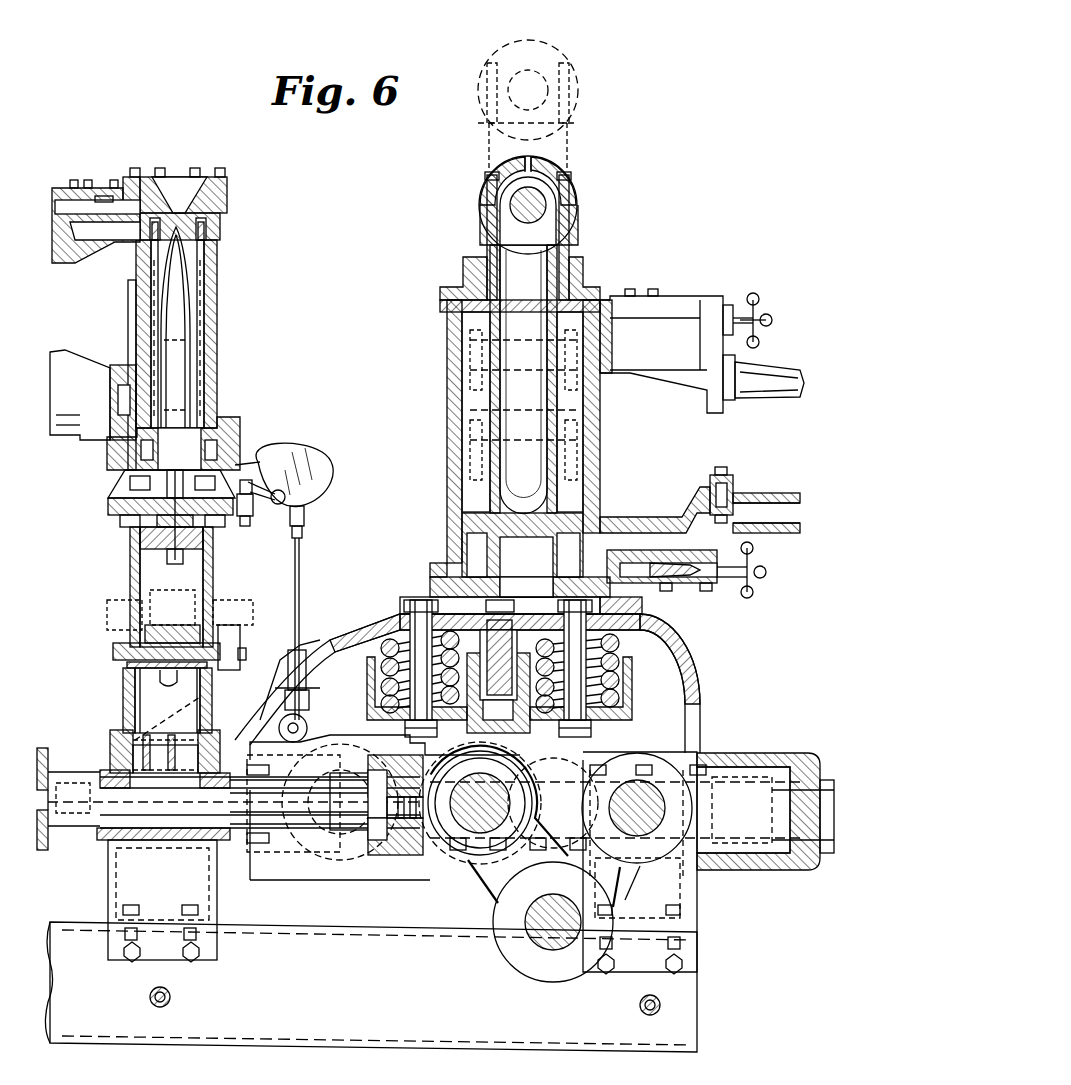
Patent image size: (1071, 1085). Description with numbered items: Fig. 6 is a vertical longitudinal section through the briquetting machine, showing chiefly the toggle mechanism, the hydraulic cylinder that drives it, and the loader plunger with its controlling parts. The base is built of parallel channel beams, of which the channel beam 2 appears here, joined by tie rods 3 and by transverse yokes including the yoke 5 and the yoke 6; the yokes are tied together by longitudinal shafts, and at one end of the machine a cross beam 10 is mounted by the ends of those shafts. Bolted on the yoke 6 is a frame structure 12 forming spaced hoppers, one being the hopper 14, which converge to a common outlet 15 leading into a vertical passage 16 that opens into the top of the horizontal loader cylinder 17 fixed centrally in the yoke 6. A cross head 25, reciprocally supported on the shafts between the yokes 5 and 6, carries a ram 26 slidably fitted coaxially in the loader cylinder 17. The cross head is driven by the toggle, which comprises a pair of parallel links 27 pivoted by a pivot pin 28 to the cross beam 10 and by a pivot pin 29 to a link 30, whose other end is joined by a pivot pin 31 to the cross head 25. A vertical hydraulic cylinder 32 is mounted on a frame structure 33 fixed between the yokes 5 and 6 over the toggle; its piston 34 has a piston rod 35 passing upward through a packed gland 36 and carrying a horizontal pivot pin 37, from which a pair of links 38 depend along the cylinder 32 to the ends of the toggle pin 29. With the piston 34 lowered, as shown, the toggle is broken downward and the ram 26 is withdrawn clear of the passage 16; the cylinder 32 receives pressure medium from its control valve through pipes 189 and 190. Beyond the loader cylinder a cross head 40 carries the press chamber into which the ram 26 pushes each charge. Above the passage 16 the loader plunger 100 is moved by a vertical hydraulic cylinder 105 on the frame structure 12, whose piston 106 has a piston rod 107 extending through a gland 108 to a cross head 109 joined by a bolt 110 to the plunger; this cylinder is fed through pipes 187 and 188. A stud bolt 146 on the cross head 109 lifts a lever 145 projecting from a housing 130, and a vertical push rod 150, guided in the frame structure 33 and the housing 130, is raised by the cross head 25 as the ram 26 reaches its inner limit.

The channel beam 2 is at (285, 1050).
The tie rod 3 is at (170, 995).
The yoke 5 is at (692, 898).
The yoke 6 is at (200, 840).
The cross beam 10 is at (758, 755).
The frame structure 12 is at (213, 566).
The hopper 14 is at (155, 685).
The outlet 15 is at (160, 725).
The vertical passage 16 is at (158, 745).
The loader cylinder 17 is at (150, 843).
The cross head 25 is at (390, 855).
The ram 26 is at (290, 824).
The parallel links 27 is at (618, 885).
The pivot pin 28 is at (665, 813).
The pivot pin 29 is at (540, 945).
The link 30 is at (500, 887).
The pivot pin 31 is at (470, 832).
The hydraulic cylinder 32 is at (600, 416).
The frame structure 33 is at (347, 638).
The piston 34 is at (450, 503).
The piston rod 35 is at (475, 343).
The gland 36 is at (590, 270).
The horizontal pivot pin 37 is at (547, 205).
The links 38 is at (80, 842).
The cross head 40 is at (45, 850).
The loader plunger 100 is at (195, 620).
The hydraulic cylinder 105 is at (217, 305).
The piston 106 is at (217, 268).
The piston rod 107 is at (197, 375).
The gland 108 is at (230, 430).
The cross head 109 is at (128, 500).
The bolt 110 is at (160, 520).
The housing 130 is at (322, 458).
The lever 145 is at (300, 489).
The stud bolt 146 is at (304, 520).
The push rod 150 is at (305, 580).
The pipe 187 is at (82, 265).
The pipe 188 is at (78, 370).
The pipe 189 is at (785, 478).
The pipe 190 is at (783, 365).